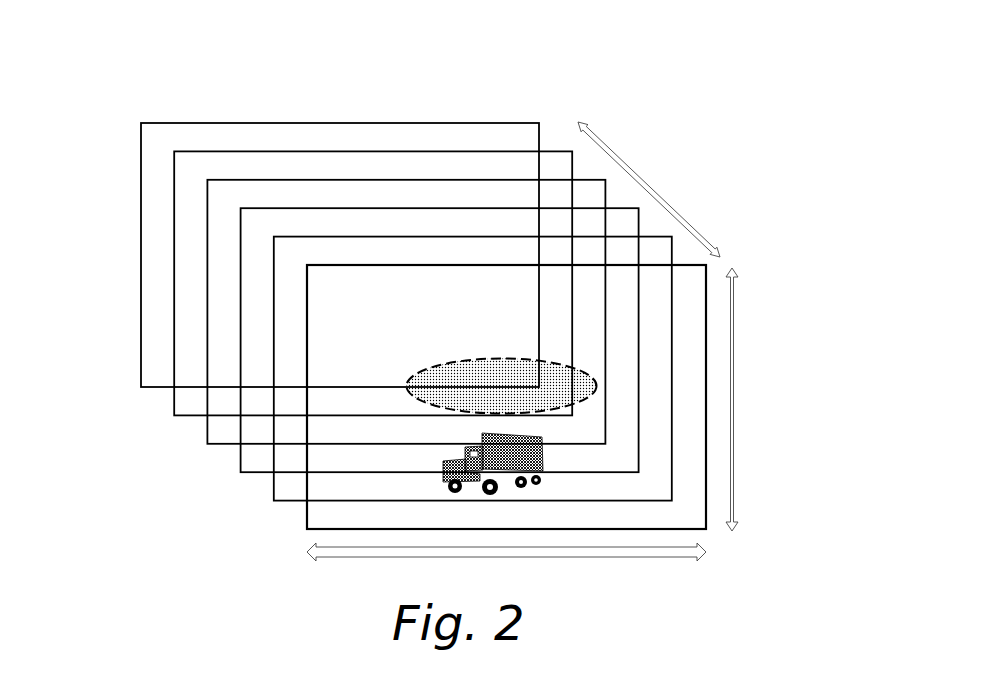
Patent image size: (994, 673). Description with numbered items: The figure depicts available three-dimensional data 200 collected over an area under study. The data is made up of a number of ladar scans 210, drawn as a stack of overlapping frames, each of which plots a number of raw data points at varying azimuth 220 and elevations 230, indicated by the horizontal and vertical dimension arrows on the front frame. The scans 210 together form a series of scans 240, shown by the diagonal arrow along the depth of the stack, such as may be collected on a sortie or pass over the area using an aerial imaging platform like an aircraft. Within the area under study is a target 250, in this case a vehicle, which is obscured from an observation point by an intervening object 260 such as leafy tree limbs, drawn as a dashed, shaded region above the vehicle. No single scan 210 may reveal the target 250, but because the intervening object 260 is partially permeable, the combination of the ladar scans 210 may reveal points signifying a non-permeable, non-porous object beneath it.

The three-dimensional data 200 is at (162, 58).
The ladar scans 210 is at (413, 147).
The azimuth 220 is at (340, 558).
The elevations 230 is at (742, 497).
The series of scans 240 is at (679, 210).
The target 250 is at (543, 464).
The intervening object 260 is at (407, 390).